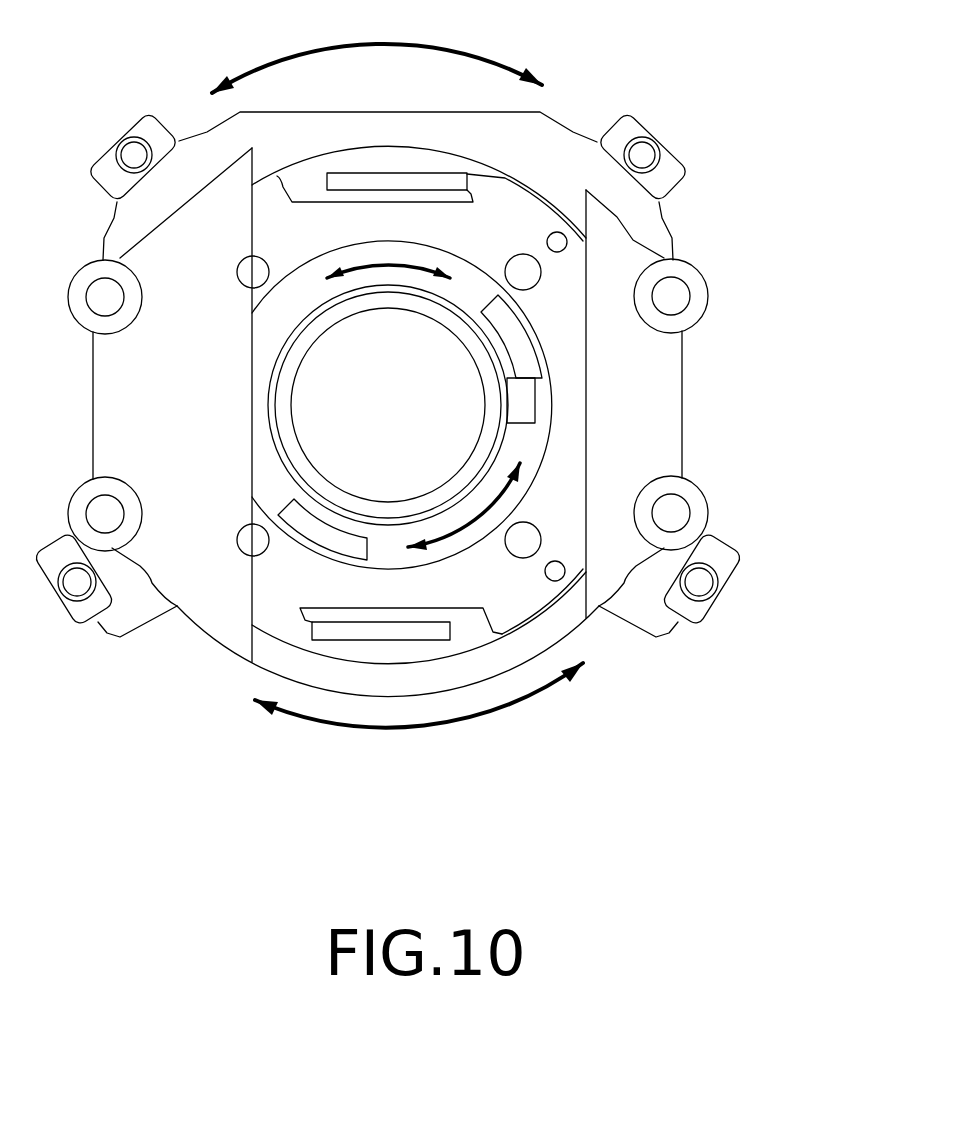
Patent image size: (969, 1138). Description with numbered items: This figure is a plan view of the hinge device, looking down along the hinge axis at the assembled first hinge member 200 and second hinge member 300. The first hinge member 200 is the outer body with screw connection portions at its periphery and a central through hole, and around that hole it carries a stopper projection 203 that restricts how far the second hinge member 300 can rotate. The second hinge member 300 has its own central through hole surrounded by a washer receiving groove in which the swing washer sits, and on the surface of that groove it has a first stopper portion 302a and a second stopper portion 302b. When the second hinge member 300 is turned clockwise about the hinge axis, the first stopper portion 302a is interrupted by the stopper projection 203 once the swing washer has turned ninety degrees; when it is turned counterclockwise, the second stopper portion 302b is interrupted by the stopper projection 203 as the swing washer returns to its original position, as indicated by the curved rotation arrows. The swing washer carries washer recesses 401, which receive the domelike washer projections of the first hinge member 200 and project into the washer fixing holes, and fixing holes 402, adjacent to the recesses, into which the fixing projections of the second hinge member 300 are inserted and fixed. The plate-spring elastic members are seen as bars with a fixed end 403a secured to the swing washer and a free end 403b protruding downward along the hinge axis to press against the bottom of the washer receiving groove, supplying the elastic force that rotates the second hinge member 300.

The first hinge member 200 is at (695, 366).
The second hinge member 300 is at (676, 229).
The first stopper portion 302a is at (315, 540).
The second stopper portion 302b is at (515, 335).
The stopper projection 203 is at (527, 400).
The washer recesses 401 is at (527, 532).
The fixing holes 402 is at (557, 570).
The fixed end 403a is at (447, 180).
The free end 403b is at (333, 178).